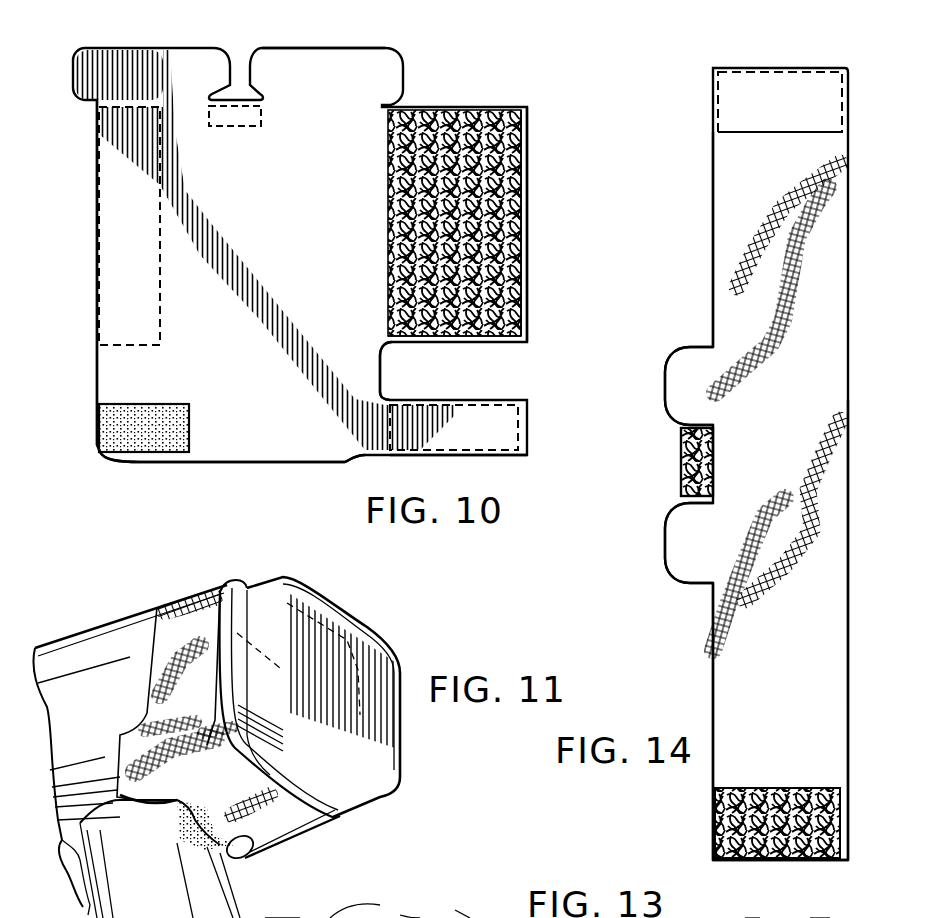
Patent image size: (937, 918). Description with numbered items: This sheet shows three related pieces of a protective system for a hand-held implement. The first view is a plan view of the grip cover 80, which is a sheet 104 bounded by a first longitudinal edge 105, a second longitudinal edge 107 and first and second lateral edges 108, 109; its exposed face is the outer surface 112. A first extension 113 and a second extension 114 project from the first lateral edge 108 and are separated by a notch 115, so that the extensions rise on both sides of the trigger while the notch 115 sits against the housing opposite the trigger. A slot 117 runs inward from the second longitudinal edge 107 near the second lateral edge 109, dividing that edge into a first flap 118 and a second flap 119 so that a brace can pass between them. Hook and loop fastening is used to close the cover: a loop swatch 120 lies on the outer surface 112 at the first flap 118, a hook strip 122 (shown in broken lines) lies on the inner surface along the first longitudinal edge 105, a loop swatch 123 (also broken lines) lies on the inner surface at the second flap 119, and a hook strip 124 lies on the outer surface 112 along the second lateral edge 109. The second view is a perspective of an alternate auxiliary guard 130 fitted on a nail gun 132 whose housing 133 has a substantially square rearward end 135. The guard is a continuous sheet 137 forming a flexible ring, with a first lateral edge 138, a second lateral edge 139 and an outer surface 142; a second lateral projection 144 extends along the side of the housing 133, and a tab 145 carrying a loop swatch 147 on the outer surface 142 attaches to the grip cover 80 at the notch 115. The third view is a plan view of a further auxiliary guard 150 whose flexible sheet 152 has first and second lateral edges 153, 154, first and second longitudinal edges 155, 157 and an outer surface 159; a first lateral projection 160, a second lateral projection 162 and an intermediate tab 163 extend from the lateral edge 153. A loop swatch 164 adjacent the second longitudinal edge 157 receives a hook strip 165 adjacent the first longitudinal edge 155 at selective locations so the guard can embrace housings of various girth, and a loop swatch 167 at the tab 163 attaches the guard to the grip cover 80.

In FIG. 10, the grip cover 80 is at (425, 84).
In FIG. 10, the sheet 104 is at (245, 437).
In FIG. 10, the first longitudinal edge 105 is at (96, 214).
In FIG. 10, the second longitudinal edge 107 is at (528, 237).
In FIG. 10, the first lateral edge 108 is at (465, 105).
In FIG. 10, the second lateral edge 109 is at (355, 462).
In FIG. 10, the outer surface 112 is at (317, 244).
In FIG. 10, the first extension 113 is at (170, 50).
In FIG. 10, the second extension 114 is at (332, 55).
In FIG. 10, the notch 115 is at (240, 86).
In FIG. 10, the slot 117 is at (487, 374).
In FIG. 10, the first flap 118 is at (528, 152).
In FIG. 10, the second flap 119 is at (512, 430).
In FIG. 10, the swatch 120 is at (506, 108).
In FIG. 10, the strip 122 is at (96, 298).
In FIG. 10, the swatch 123 is at (500, 452).
In FIG. 10, the strip 124 is at (125, 453).
In FIG. 11, the auxiliary guard 130 is at (325, 836).
In FIG. 13, the auxiliary guard 130 is at (460, 917).
In FIG. 11, the nail gun 132 is at (68, 628).
In FIG. 11, the housing 133 is at (116, 640).
In FIG. 11, the rearward end 135 is at (364, 632).
In FIG. 11, the sheet 137 is at (238, 590).
In FIG. 13, the sheet 137 is at (408, 917).
In FIG. 11, the first lateral edge 138 is at (150, 670).
In FIG. 11, the second lateral edge 139 is at (228, 693).
In FIG. 11, the outer surface 142 is at (172, 605).
In FIG. 13, the outer surface 142 is at (281, 909).
In FIG. 11, the second lateral projection 144 is at (132, 754).
In FIG. 11, the tab 145 is at (172, 840).
In FIG. 11, the swatch 147 is at (225, 852).
In FIG. 14, the auxiliary guard 150 is at (695, 627).
In FIG. 14, the flexible sheet 152 is at (832, 584).
In FIG. 14, the first lateral edge 153 is at (713, 680).
In FIG. 14, the second lateral edge 154 is at (848, 744).
In FIG. 13, the second lateral edge 154 is at (828, 909).
In FIG. 14, the first longitudinal edge 155 is at (772, 68).
In FIG. 13, the first longitudinal edge 155 is at (745, 917).
In FIG. 14, the second longitudinal edge 157 is at (795, 862).
In FIG. 14, the outer surface 159 is at (722, 238).
In FIG. 14, the first lateral projection 160 is at (675, 372).
In FIG. 14, the second lateral projection 162 is at (680, 553).
In FIG. 14, the tab 163 is at (682, 458).
In FIG. 14, the swatch 164 is at (715, 826).
In FIG. 14, the strip 165 is at (737, 132).
In FIG. 14, the swatch 167 is at (682, 470).